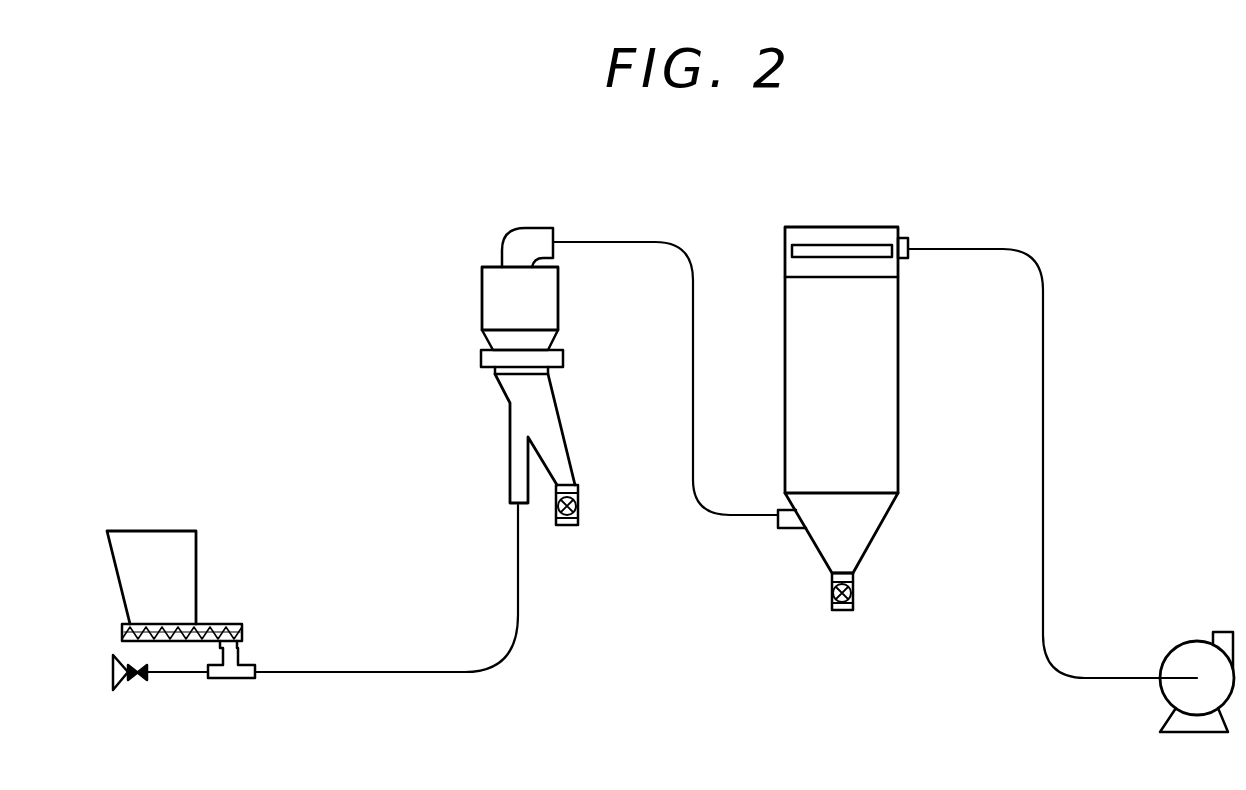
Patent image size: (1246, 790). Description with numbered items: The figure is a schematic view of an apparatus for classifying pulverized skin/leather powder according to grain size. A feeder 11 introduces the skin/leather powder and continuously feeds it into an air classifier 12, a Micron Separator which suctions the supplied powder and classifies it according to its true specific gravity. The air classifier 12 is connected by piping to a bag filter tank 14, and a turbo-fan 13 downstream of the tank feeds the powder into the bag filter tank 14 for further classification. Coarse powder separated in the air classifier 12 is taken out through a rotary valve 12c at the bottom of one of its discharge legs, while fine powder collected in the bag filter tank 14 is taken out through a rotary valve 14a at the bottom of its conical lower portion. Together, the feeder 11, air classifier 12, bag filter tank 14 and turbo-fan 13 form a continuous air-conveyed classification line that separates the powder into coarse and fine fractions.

The feeder 11 is at (182, 558).
The air classifier 12 is at (502, 295).
The rotary valve 12c is at (578, 507).
The turbo-fan 13 is at (1192, 650).
The bag filter tank 14 is at (883, 386).
The rotary valve 14a is at (832, 600).